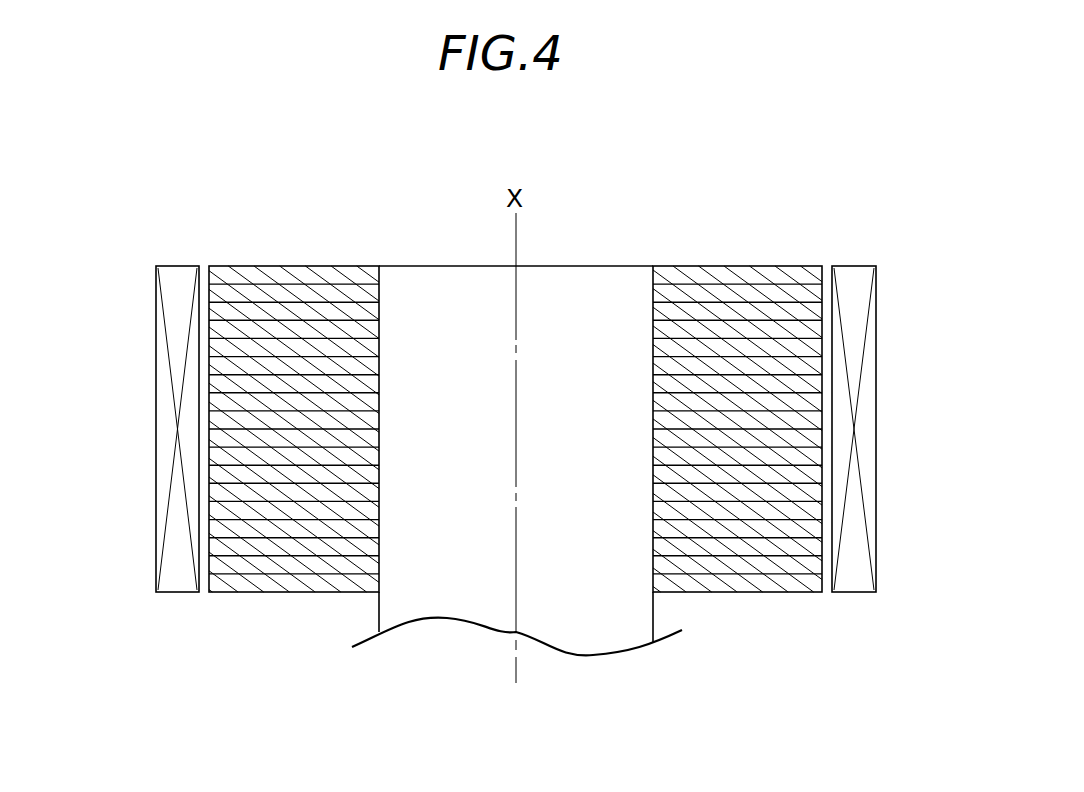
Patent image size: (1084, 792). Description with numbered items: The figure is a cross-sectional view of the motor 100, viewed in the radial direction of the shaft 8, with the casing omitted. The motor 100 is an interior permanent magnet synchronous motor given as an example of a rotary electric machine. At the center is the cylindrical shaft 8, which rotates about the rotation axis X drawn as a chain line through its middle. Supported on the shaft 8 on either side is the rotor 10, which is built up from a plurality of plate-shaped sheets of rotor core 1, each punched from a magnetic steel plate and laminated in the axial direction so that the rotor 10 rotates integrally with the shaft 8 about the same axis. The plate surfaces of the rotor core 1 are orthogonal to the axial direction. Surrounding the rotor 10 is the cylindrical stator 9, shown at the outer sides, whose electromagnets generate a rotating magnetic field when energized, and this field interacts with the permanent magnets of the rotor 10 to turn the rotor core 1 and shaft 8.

The motor 100 is at (162, 200).
The rotor core 1 is at (315, 287).
The rotor 10 is at (733, 260).
The stator 9 is at (865, 412).
The shaft 8 is at (398, 603).